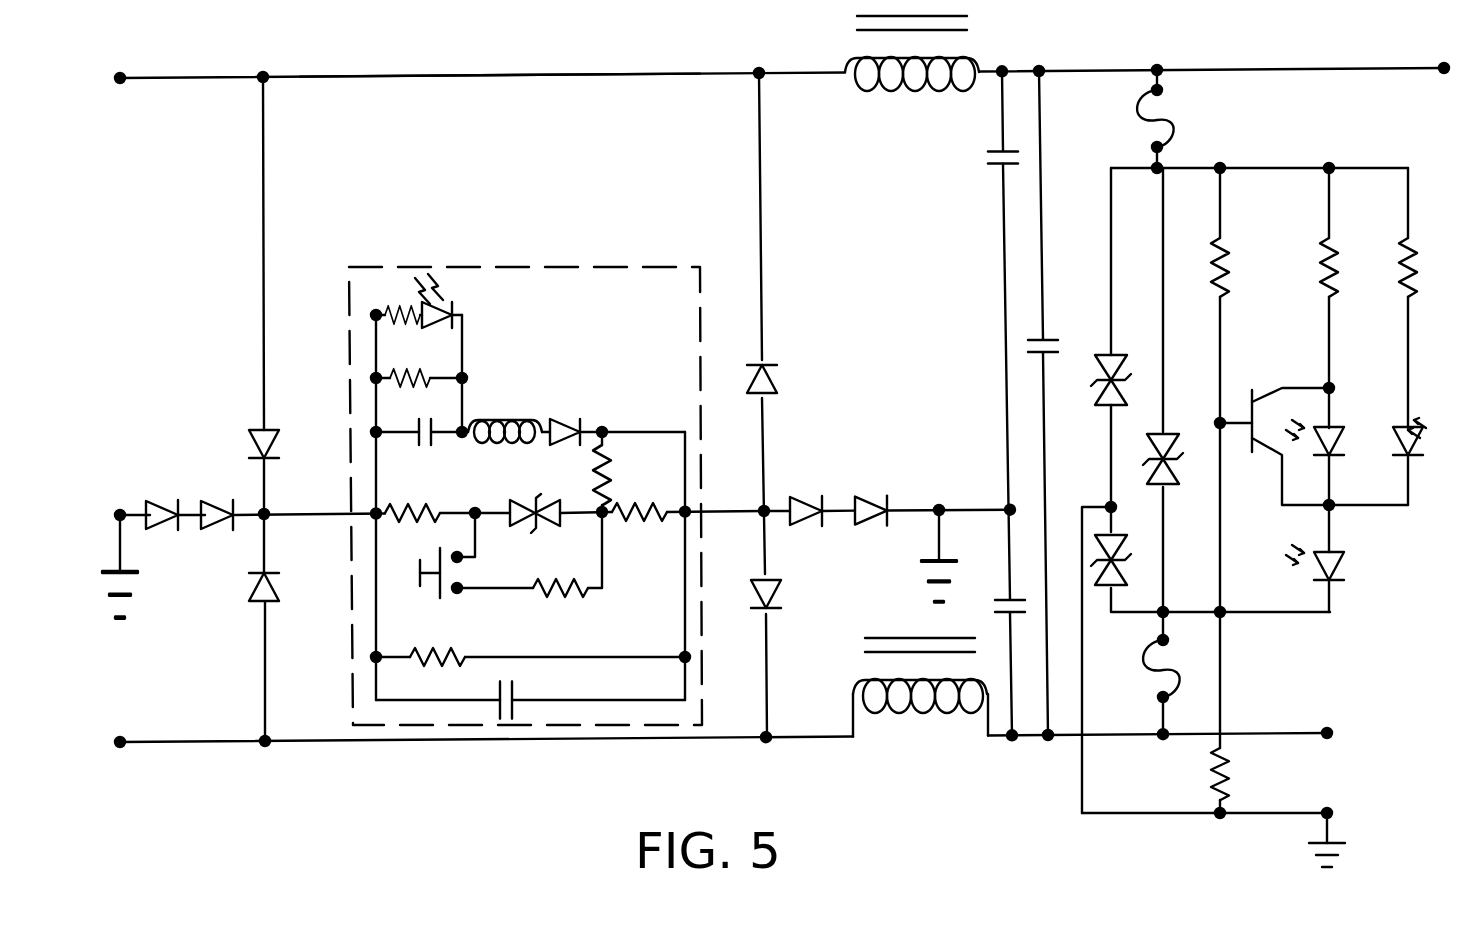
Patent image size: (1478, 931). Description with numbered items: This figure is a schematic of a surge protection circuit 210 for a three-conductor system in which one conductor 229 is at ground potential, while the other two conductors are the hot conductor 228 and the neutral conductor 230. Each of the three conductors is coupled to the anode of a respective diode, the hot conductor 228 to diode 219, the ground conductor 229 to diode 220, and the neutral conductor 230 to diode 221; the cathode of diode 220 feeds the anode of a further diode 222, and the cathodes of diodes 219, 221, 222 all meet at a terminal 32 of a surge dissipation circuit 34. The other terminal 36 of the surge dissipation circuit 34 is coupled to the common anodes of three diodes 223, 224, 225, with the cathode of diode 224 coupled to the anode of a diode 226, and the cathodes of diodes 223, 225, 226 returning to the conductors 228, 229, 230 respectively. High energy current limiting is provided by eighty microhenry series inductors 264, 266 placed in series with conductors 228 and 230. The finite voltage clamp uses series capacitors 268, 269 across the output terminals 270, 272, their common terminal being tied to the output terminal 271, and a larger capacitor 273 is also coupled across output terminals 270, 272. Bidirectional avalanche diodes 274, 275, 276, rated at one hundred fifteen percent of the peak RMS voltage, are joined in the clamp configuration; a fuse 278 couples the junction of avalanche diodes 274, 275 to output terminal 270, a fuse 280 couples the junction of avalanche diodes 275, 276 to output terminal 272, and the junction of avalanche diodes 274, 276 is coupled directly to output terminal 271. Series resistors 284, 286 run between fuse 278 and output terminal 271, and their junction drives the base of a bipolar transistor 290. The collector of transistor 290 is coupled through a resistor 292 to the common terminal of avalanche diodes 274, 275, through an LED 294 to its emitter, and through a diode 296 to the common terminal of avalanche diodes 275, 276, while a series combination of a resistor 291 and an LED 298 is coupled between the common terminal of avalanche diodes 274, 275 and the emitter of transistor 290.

The surge protection circuit 210 is at (597, 60).
The hot conductor 228 is at (505, 78).
The neutral conductor 230 is at (547, 745).
The terminal 32 is at (268, 512).
The terminal 36 is at (769, 507).
The surge dissipation circuit 34 is at (488, 255).
The diode 219 is at (250, 440).
The diode 221 is at (252, 597).
The diode 220 is at (170, 488).
The diode 222 is at (215, 505).
The ground conductor 229 is at (125, 548).
The diode 223 is at (778, 378).
The diode 225 is at (780, 606).
The diode 224 is at (812, 504).
The diode 226 is at (872, 528).
The series inductor 264 is at (926, 92).
The series inductor 266 is at (920, 712).
The capacitor 268 is at (990, 158).
The capacitor 269 is at (995, 608).
The capacitor 273 is at (1032, 342).
The output terminal 270 is at (1444, 63).
The fuse 278 is at (1166, 118).
The fuse 280 is at (1175, 672).
The bidirectional avalanche diode 274 is at (1105, 355).
The bidirectional avalanche diode 275 is at (1150, 478).
The bidirectional avalanche diode 276 is at (1108, 596).
The resistor 284 is at (1230, 268).
The resistor 286 is at (1236, 768).
The resistor 291 is at (1420, 283).
The resistor 292 is at (1340, 268).
The bipolar transistor 290 is at (1270, 390).
The LED 294 is at (1345, 442).
The diode 296 is at (1350, 566).
The LED 298 is at (1422, 435).
The output terminal 272 is at (1335, 731).
The output terminal 271 is at (1335, 810).